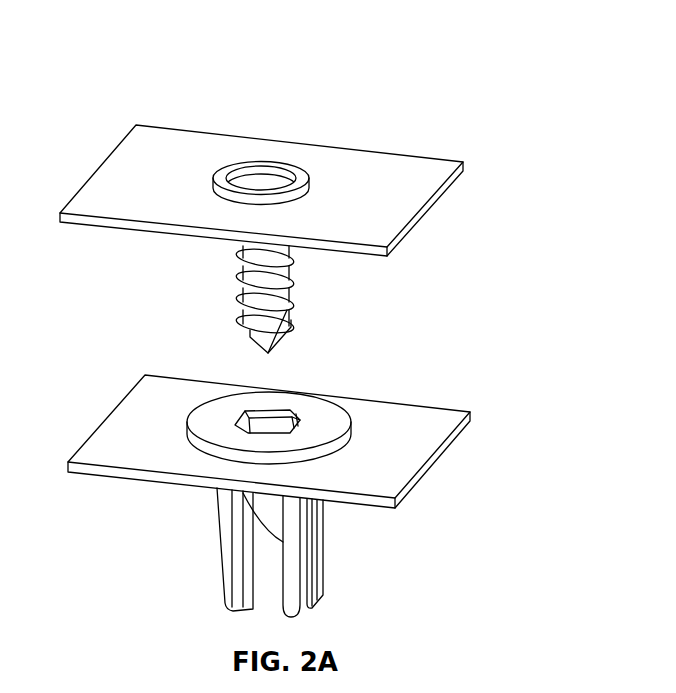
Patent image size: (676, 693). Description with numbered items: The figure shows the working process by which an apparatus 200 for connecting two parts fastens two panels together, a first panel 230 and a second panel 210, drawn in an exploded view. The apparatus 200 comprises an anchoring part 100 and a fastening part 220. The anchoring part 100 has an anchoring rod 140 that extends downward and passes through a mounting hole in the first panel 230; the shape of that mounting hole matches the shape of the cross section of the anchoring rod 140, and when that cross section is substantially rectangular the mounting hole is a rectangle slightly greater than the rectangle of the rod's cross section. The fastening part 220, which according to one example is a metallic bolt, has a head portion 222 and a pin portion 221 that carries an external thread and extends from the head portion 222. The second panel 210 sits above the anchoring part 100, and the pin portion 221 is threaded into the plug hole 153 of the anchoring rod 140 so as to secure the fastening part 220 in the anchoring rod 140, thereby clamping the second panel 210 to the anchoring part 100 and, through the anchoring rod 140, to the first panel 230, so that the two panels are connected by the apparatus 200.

The apparatus for connecting two parts 200 is at (167, 113).
The second panel 210 is at (408, 172).
The head portion 222 is at (273, 182).
The fastening part 220 is at (312, 291).
The pin portion 221 is at (242, 295).
The first panel 230 is at (405, 440).
The anchoring part 100 is at (316, 418).
The plug hole 153 is at (268, 423).
The anchoring rod 140 is at (300, 558).